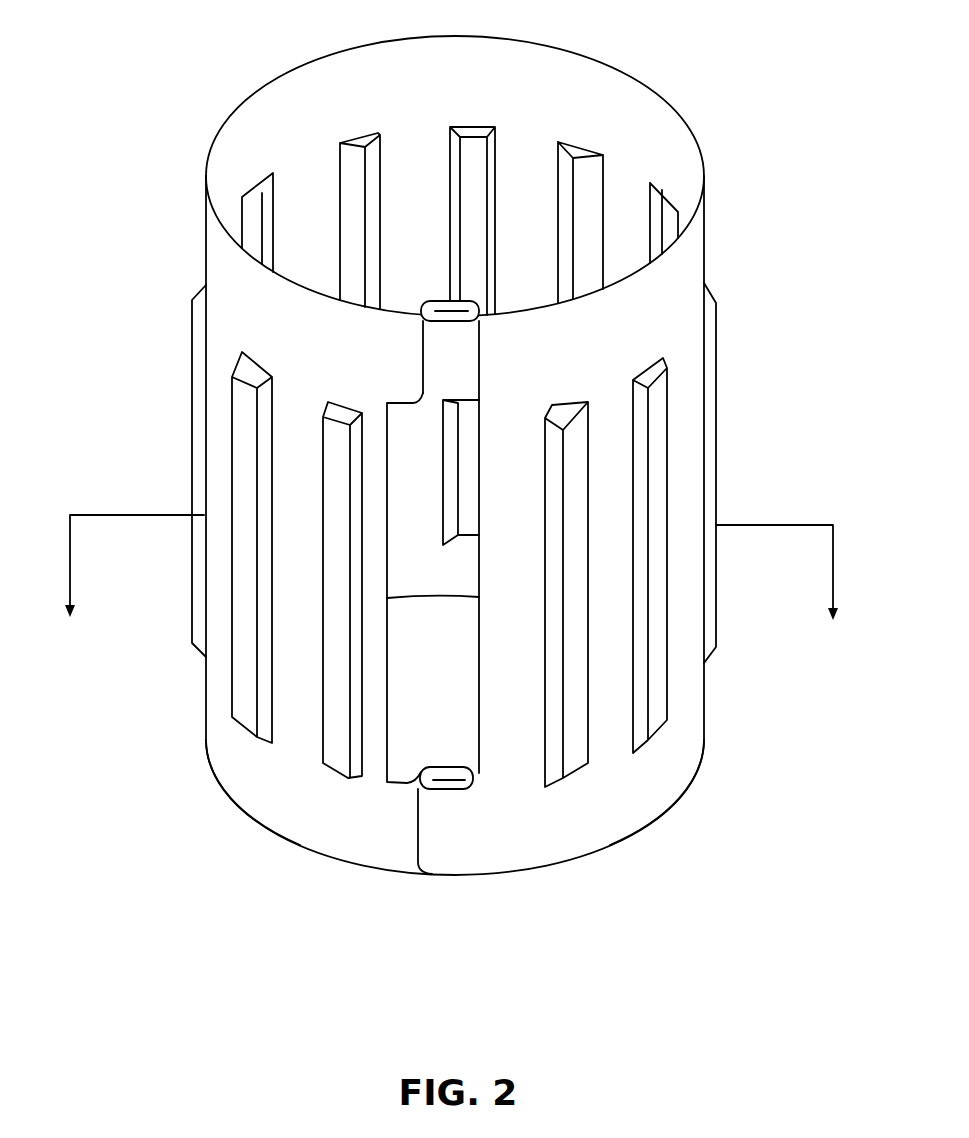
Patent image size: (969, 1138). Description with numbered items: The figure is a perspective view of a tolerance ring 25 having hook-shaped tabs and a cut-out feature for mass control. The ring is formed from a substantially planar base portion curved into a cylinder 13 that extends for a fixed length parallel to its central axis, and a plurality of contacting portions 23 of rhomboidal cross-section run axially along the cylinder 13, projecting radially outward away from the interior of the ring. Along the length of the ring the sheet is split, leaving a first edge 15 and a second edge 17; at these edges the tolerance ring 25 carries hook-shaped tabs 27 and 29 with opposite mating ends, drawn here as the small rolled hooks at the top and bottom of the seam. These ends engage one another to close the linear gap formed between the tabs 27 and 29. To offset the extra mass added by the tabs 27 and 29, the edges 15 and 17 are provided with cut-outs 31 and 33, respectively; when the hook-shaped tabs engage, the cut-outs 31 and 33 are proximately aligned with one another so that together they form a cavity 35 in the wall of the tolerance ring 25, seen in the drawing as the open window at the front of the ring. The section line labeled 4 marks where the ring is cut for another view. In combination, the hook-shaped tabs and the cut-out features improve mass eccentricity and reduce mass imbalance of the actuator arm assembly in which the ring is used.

The section line 4- 4 is at (451, 586).
The cylinder 13 is at (686, 494).
The first edge 15 is at (315, 820).
The second edge 17 is at (547, 823).
The contacting portions 23 is at (660, 407).
The tolerance ring 25 is at (481, 493).
The hook-shaped tab 27 is at (421, 311).
The hook-shaped tab 29 is at (437, 338).
The cut-out 31 is at (398, 742).
The cut-out 33 is at (463, 743).
The cavity 35 is at (452, 636).